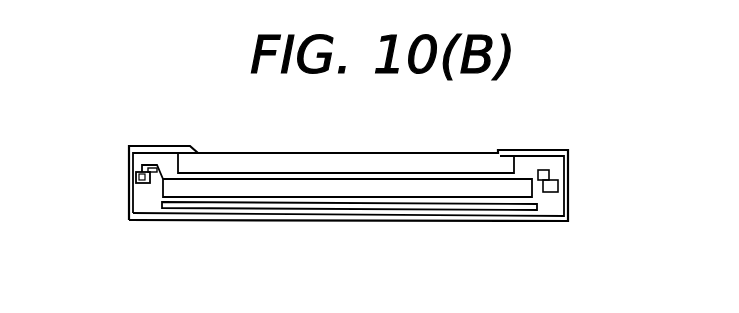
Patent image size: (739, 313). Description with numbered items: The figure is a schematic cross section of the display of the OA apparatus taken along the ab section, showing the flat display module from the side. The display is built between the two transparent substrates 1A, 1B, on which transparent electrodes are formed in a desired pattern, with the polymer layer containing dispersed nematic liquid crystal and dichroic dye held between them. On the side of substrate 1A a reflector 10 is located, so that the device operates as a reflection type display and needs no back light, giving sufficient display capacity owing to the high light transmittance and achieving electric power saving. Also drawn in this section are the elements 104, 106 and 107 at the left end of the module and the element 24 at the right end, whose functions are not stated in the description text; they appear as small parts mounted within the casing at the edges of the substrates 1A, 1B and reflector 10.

The frame 104 is at (132, 146).
The holder 106 is at (141, 168).
The terminal 107 is at (134, 186).
The transparent substrate 1A is at (505, 166).
The transparent substrate 1B is at (525, 187).
The light guide plate 24 is at (515, 178).
The reflector 10 is at (528, 208).